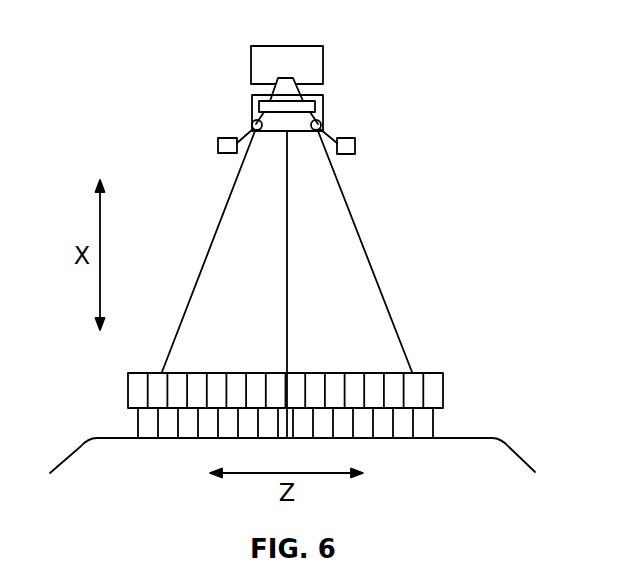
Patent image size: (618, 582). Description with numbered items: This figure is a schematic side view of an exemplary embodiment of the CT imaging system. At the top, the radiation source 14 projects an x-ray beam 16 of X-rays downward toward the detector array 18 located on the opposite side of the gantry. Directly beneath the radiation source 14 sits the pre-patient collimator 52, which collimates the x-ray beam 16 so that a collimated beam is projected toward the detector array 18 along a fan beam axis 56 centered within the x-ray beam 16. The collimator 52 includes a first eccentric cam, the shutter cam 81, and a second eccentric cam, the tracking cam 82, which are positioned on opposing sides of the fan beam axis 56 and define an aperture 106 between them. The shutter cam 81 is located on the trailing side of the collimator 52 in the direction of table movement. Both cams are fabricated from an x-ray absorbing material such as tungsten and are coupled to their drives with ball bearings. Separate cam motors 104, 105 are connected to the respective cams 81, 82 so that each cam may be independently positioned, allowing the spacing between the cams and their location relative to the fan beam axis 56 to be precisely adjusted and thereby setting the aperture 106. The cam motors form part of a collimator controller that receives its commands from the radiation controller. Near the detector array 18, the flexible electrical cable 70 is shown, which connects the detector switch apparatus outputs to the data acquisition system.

The radiation source 14 is at (298, 46).
The pre-patient collimator 52 is at (334, 87).
The shutter cam 81 is at (254, 121).
The tracking cam 82 is at (320, 121).
The cam motor 104 is at (228, 154).
The cam motor 105 is at (345, 155).
The aperture 106 is at (296, 156).
The x-ray beam 16 is at (362, 212).
The fan beam axis 56 is at (299, 324).
The detector array 18 is at (456, 388).
The flexible electrical cable 70 is at (70, 455).